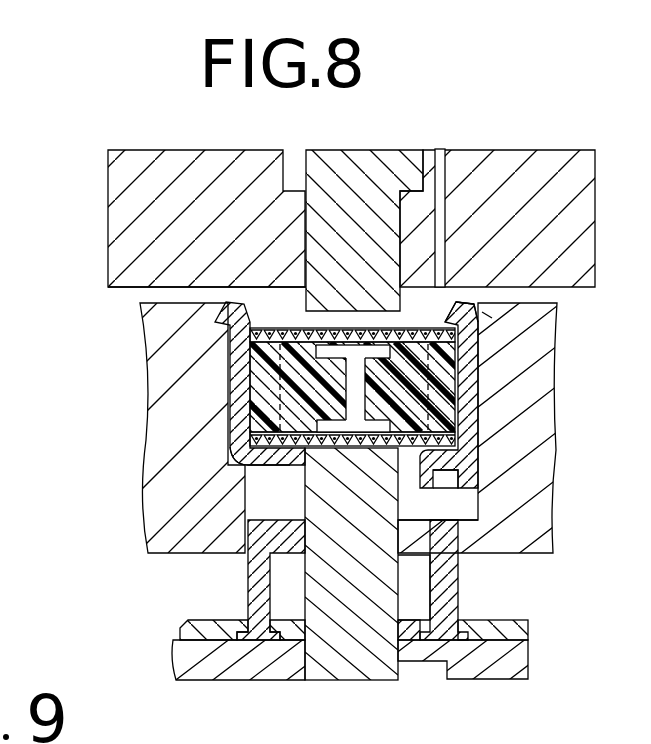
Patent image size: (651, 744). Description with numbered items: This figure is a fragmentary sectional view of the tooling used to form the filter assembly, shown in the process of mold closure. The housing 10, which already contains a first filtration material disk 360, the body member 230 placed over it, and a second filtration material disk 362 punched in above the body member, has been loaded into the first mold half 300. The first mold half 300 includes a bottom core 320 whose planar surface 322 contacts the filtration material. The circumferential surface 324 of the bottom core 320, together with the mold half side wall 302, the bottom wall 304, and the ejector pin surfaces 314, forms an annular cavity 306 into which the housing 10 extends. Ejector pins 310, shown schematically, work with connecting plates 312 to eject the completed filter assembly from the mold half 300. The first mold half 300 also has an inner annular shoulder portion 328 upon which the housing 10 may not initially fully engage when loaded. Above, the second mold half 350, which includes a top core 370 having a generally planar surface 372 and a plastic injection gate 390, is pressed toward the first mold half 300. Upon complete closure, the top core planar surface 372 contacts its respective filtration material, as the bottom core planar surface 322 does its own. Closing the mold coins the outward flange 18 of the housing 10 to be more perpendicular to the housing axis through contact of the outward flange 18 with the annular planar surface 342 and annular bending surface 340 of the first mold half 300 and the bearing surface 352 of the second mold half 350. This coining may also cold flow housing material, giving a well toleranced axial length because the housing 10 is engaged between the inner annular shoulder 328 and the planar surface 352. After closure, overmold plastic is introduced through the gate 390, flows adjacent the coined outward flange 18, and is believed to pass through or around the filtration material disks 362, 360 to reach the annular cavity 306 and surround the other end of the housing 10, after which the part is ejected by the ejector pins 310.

The second plastic injection mold half 350 is at (96, 220).
The top core 370 is at (387, 162).
The plastic injection gate 390 is at (443, 178).
The bearing surface 352 is at (108, 290).
The first mold half 300 is at (115, 470).
The housing 10 is at (478, 408).
The annular bending surface 340 is at (480, 338).
The annular planar surface 342 is at (480, 323).
The outward flange 18 is at (490, 317).
The planar surface of top core 372 is at (475, 300).
The mold half side wall 302 is at (470, 478).
The circumferential surface 324 is at (402, 500).
The inner annular shoulder portion 328 is at (250, 458).
The planar surface of bottom core 322 is at (242, 470).
The second filtration material disk 362 is at (240, 320).
The first filtration material disk 360 is at (335, 441).
The body member 230 is at (253, 396).
The bottom core 320 is at (373, 668).
The annular cavity 306 is at (265, 522).
The bottom wall 304 is at (413, 512).
The ejector pin surfaces 314 is at (443, 510).
The ejector pins 310 is at (460, 605).
The connecting plates 312 is at (528, 630).